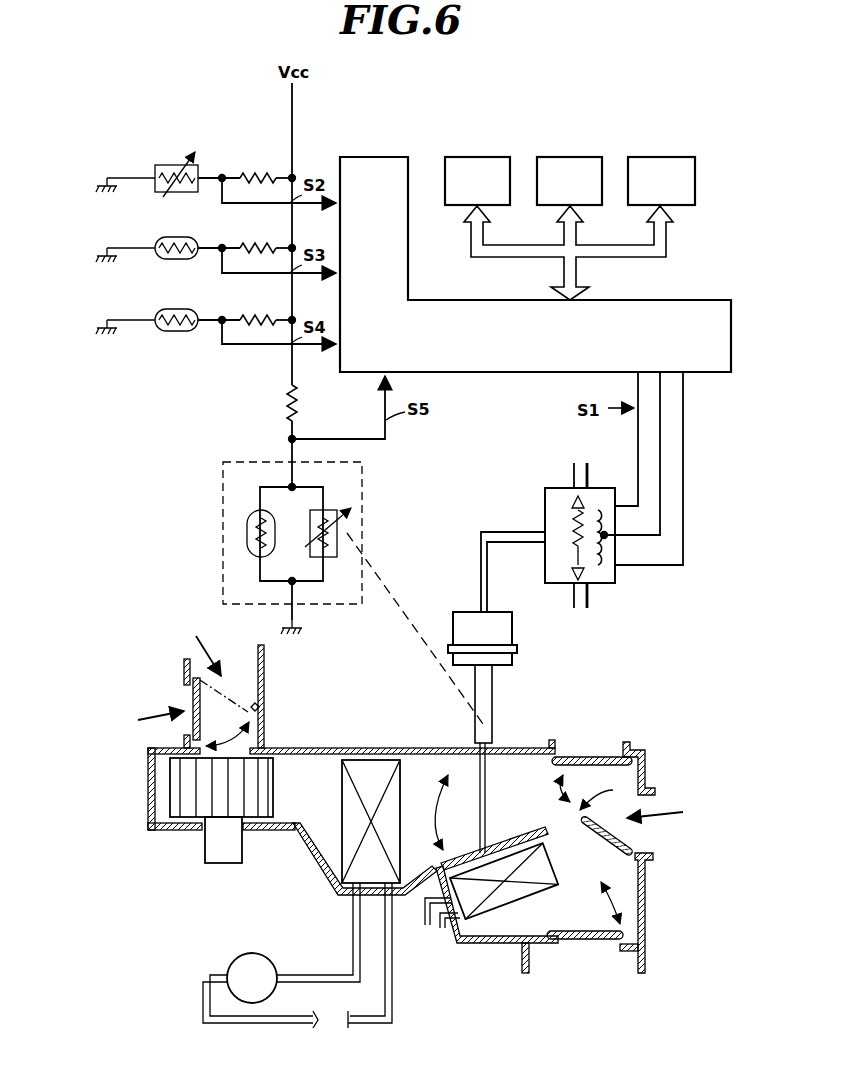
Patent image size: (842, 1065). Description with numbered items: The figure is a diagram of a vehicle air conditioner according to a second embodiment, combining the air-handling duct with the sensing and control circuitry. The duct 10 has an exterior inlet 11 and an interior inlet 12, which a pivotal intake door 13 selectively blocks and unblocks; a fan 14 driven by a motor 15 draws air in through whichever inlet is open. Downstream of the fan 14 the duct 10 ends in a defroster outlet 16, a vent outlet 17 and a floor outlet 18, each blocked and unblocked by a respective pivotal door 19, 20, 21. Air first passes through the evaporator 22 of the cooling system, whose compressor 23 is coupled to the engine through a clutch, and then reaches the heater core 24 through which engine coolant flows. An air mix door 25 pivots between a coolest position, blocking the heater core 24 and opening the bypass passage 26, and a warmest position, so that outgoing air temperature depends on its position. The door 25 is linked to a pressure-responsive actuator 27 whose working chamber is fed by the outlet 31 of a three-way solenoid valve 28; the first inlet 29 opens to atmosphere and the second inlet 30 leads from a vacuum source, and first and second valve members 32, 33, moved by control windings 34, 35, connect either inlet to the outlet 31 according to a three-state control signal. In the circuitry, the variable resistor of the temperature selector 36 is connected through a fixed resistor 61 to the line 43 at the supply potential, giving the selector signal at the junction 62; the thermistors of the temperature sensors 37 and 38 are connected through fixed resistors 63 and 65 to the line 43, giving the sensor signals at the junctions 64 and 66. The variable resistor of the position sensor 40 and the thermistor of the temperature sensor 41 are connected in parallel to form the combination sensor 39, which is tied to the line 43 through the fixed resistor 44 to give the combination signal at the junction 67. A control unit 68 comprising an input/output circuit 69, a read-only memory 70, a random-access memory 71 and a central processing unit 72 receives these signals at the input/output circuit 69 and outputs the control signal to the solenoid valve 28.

The duct 10 is at (160, 831).
The exterior inlet 11 is at (195, 641).
The interior inlet 12 is at (146, 720).
The intake door 13 is at (192, 697).
The fan 14 is at (168, 780).
The motor 15 is at (204, 860).
The defroster outlet 16 is at (604, 743).
The vent outlet 17 is at (672, 813).
The floor outlet 18 is at (574, 942).
The pivotal door 19 is at (584, 757).
The pivotal door 20 is at (626, 840).
The pivotal door 21 is at (599, 940).
The evaporator 22 is at (338, 834).
The compressor 23 is at (264, 954).
The heater core 24 is at (483, 922).
The air mix door 25 is at (465, 852).
The bypass passage 26 is at (553, 820).
The pressure-responsive actuator 27 is at (463, 611).
The three-way solenoid valve 28 is at (545, 517).
The first inlet 29 is at (574, 473).
The second inlet 30 is at (574, 597).
The outlet 31 is at (545, 540).
The first valve member 32 is at (572, 497).
The second valve member 33 is at (572, 578).
The first control winding 34 is at (596, 510).
The second control winding 35 is at (597, 565).
The temperature selector 36 is at (160, 165).
The temperature sensor 37 is at (170, 238).
The temperature sensor 38 is at (170, 310).
The combination sensor 39 is at (322, 548).
The position sensor 40 is at (326, 557).
The temperature sensor 41 is at (258, 555).
The line 43 is at (293, 120).
The fixed resistor 44 is at (284, 402).
The fixed resistor 61 is at (257, 172).
The junction 62 is at (222, 175).
The fixed resistor 63 is at (257, 243).
The junction 64 is at (221, 245).
The fixed resistor 65 is at (257, 315).
The junction 66 is at (221, 317).
The junction 67 is at (288, 439).
The control unit 68 is at (570, 185).
The input/output circuit 69 is at (390, 156).
The read-only memory 70 is at (494, 156).
The random-access memory 71 is at (584, 156).
The central processing unit 72 is at (678, 156).